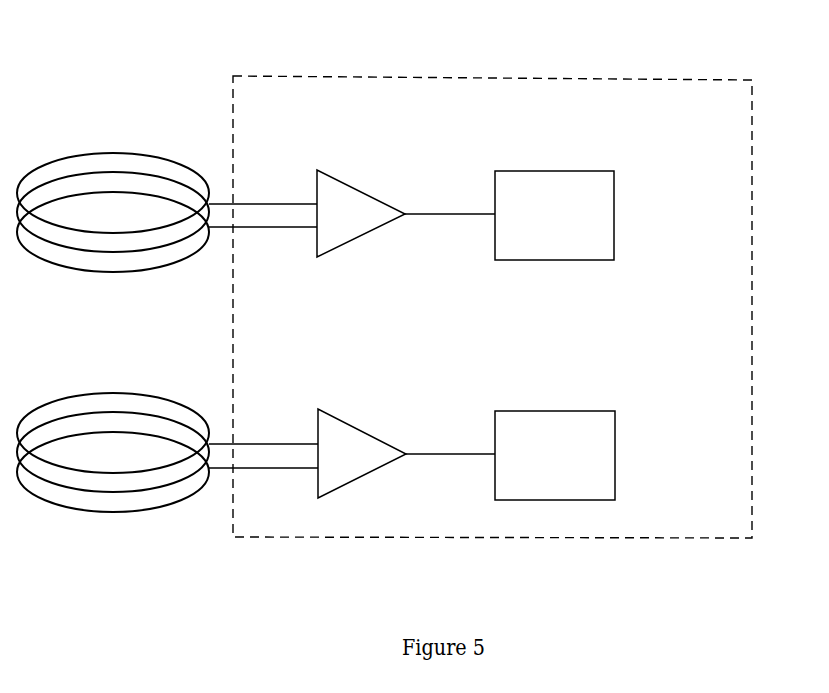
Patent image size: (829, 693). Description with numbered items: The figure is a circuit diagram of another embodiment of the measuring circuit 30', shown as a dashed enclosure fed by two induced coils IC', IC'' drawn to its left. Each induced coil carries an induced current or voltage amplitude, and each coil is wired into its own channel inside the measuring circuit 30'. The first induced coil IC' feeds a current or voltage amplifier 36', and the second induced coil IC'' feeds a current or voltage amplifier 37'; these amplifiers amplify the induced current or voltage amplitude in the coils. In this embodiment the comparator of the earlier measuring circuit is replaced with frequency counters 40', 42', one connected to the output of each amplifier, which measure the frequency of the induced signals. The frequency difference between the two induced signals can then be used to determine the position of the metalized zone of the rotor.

The measuring circuit 30' is at (492, 275).
The induced coil IC' is at (113, 169).
The induced coil IC'' is at (113, 409).
The current or voltage amplifier 36' is at (368, 181).
The current or voltage amplifier 37' is at (370, 422).
The frequency counter 40' is at (606, 215).
The frequency counter 42' is at (606, 455).